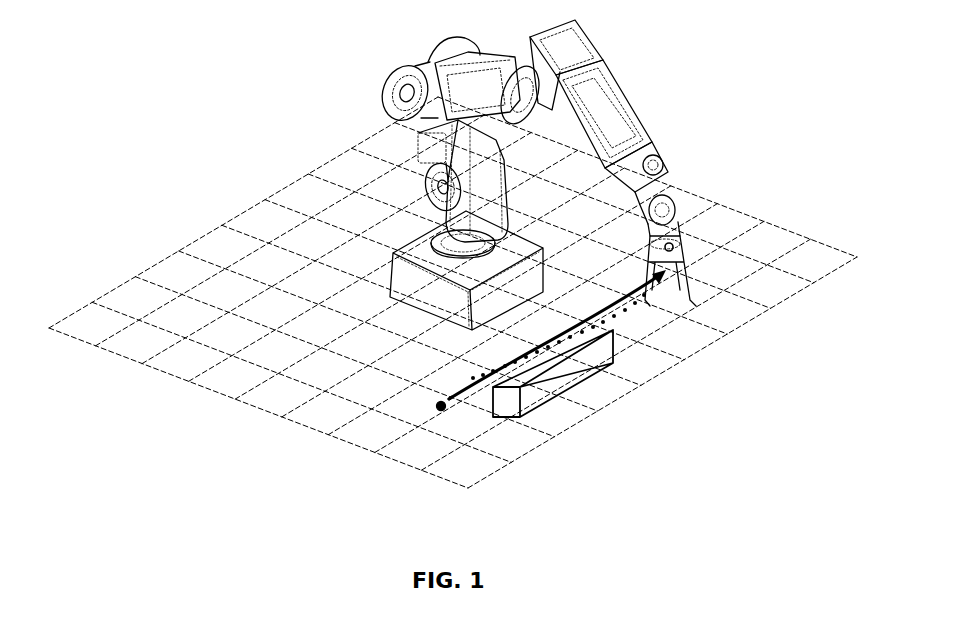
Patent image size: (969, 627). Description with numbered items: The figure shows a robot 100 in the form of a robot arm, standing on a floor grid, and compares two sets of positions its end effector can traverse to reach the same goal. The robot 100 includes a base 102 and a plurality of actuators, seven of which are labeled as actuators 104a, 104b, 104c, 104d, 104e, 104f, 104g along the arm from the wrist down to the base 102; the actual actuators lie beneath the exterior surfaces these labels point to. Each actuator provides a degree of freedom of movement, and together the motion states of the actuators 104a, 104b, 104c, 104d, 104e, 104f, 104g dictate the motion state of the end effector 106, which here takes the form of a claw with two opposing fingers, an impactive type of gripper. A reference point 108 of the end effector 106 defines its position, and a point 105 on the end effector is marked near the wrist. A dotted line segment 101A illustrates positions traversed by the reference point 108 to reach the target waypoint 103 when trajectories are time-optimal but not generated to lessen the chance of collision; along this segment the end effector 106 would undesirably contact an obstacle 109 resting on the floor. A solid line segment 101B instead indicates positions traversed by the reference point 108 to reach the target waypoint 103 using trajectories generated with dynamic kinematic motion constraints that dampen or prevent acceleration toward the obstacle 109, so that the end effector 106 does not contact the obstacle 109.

The robot 100 is at (352, 68).
The dotted line segment 101A is at (625, 311).
The solid line segment 101B is at (466, 392).
The base 102 is at (430, 300).
The target waypoint 103 is at (441, 412).
The actuator 104a is at (672, 236).
The actuator 104b is at (657, 213).
The actuator 104c is at (656, 167).
The actuator 104d is at (513, 95).
The actuator 104e is at (400, 92).
The actuator 104f is at (448, 192).
The actuator 104g is at (450, 260).
The tool center point 105 is at (675, 248).
The end effector 106 is at (685, 263).
The reference point 108 is at (665, 273).
The obstacle 109 is at (565, 393).